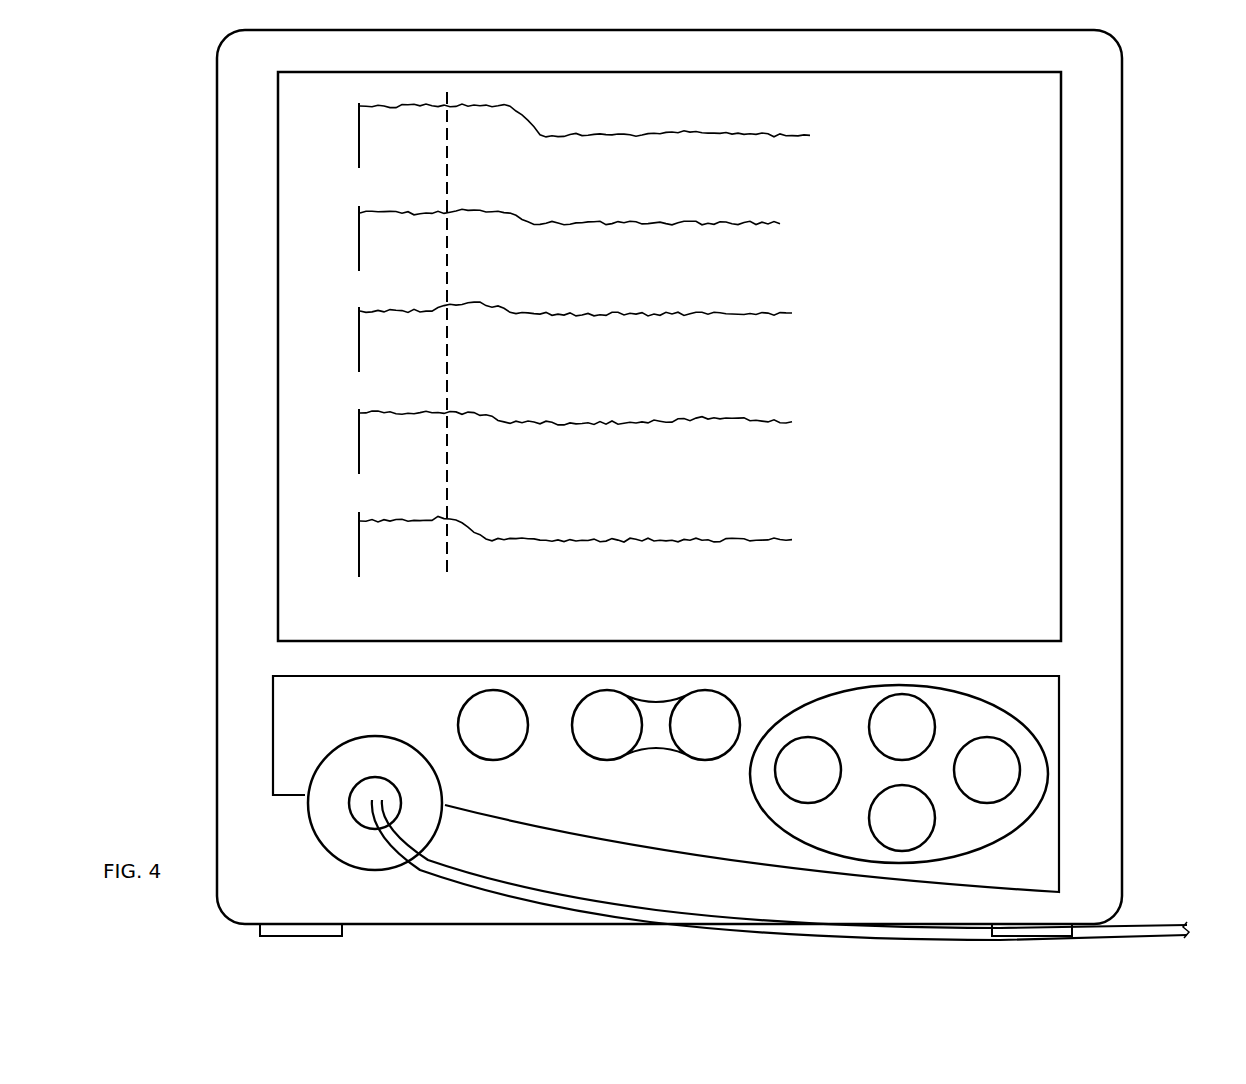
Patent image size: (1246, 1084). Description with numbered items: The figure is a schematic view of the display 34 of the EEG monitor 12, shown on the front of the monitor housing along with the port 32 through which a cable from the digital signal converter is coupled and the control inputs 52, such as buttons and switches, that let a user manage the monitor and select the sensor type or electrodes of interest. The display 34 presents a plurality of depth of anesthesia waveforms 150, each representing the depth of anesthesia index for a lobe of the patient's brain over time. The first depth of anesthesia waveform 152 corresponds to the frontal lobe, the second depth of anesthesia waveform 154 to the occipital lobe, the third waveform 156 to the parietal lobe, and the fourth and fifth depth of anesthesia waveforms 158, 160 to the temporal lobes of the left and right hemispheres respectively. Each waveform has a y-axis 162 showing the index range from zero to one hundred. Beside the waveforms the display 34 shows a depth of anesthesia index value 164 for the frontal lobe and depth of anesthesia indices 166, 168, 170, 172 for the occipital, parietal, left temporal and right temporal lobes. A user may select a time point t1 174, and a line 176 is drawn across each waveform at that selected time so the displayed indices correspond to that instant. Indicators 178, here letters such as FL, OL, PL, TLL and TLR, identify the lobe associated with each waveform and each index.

The EEG monitor 12 is at (1188, 122).
The port 32 is at (348, 800).
The display 34 is at (1062, 150).
The control inputs 52 is at (487, 760).
The depth of anesthesia waveforms 150 is at (222, 330).
The first depth of anesthesia waveform 152 is at (316, 108).
The second depth of anesthesia waveform 154 is at (316, 211).
The third waveform 156 is at (316, 316).
The fourth depth of anesthesia waveform 158 is at (316, 418).
The fifth waveform 160 is at (316, 521).
The y-axis 162 is at (361, 104).
The depth of anesthesia index value 164 is at (990, 130).
The depth of anesthesia index 166 is at (990, 233).
The depth of anesthesia index 168 is at (990, 335).
The depth of anesthesia index 170 is at (990, 438).
The depth of anesthesia index 172 is at (990, 541).
The time point t1 174 is at (522, 572).
The line 176 is at (443, 548).
The indicators 178 is at (303, 141).